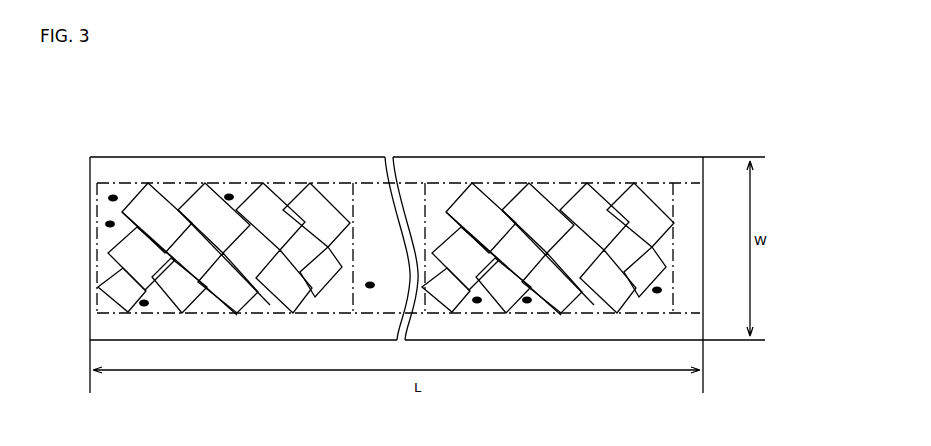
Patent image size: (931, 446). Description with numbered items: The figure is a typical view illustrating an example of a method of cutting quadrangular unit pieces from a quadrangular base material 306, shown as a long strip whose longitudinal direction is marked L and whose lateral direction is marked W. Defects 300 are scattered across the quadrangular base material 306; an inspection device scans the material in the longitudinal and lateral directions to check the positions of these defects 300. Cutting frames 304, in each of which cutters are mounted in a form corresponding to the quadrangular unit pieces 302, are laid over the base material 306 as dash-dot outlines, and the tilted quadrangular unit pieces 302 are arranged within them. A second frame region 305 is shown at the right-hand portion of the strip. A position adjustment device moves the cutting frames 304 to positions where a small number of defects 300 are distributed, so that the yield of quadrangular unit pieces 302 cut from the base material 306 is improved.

The defects 300 is at (113, 195).
The quadrangular unit pieces 302 is at (267, 198).
The cutting frames 304 is at (337, 190).
The second region 305 is at (662, 192).
The quadrangular base material 306 is at (483, 180).